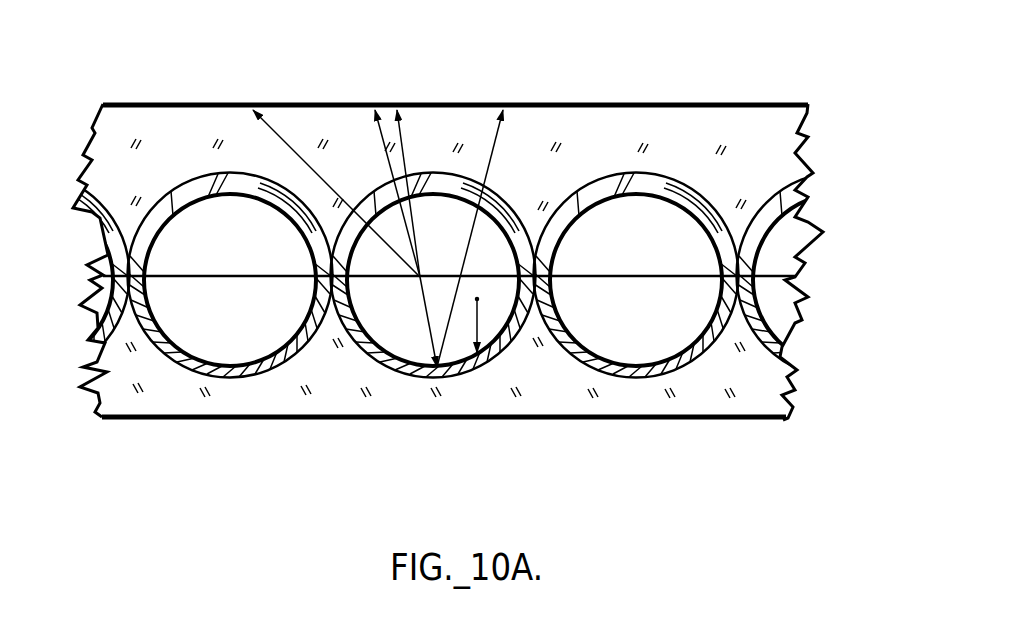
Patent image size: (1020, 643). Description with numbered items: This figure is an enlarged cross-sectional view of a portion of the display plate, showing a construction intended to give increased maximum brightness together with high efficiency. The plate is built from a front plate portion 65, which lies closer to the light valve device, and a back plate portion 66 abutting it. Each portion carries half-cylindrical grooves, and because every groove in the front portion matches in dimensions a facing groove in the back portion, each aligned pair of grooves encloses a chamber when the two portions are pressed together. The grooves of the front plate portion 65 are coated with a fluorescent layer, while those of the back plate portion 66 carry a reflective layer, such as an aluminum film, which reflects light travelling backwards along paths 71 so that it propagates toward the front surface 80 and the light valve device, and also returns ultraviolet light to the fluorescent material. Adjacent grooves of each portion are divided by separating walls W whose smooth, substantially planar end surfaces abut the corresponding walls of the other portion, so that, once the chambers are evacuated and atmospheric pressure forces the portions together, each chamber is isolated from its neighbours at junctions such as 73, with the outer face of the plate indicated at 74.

The front plate portion 65 is at (606, 132).
The back plate portion 66 is at (704, 398).
The path 71 is at (418, 290).
The cell junction 73 is at (327, 275).
The upper substrate surface 74 is at (703, 104).
The front surface 80 is at (316, 104).
The separating wall W is at (524, 268).